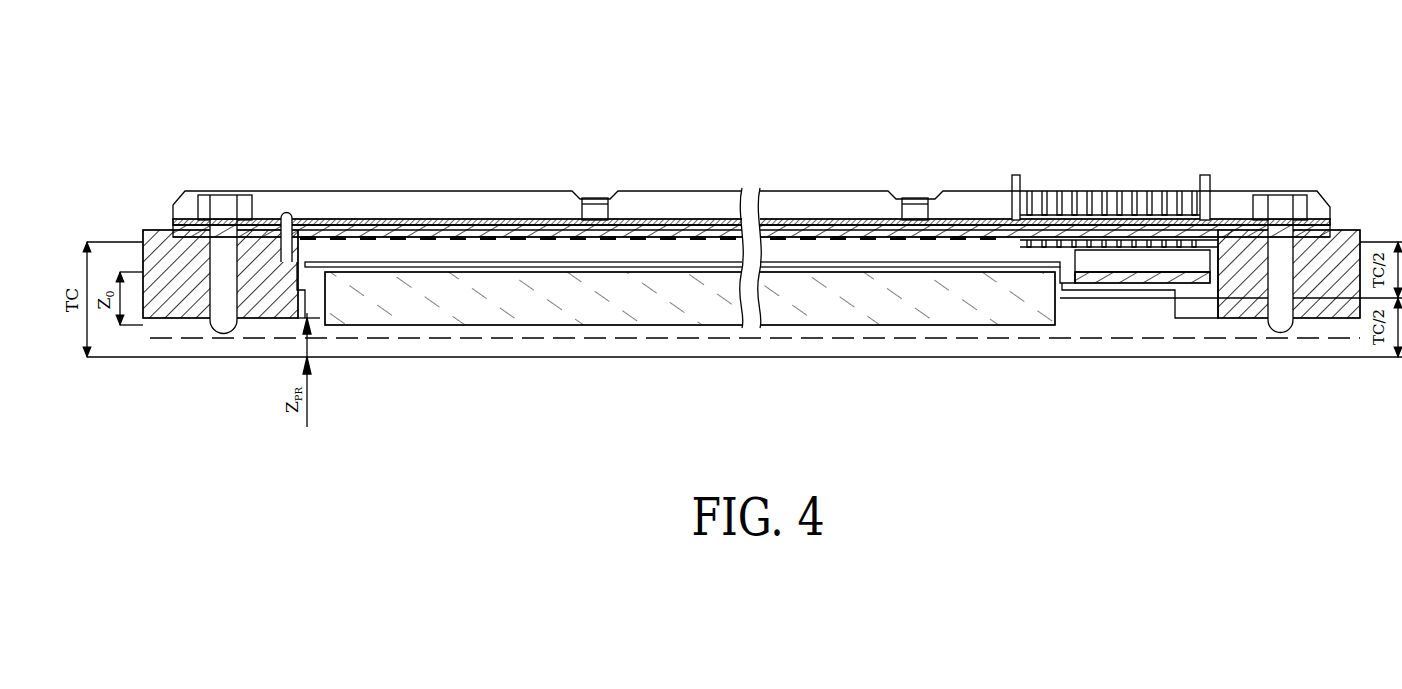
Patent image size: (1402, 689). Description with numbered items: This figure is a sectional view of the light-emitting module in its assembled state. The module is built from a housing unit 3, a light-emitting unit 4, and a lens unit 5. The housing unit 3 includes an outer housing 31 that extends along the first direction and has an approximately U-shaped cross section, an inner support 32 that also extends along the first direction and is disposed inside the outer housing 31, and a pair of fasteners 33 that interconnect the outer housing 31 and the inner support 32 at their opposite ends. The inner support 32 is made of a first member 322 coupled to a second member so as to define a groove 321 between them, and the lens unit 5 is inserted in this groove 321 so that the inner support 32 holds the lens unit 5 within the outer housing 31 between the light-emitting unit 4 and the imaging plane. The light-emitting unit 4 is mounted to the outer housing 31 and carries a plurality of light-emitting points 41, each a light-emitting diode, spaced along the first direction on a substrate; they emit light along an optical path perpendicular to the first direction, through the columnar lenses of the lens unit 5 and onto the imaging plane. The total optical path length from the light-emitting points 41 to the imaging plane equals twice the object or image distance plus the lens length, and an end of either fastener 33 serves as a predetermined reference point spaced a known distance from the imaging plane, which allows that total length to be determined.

The housing unit 3 is at (443, 189).
The outer housing 31 is at (788, 218).
The inner support 32 is at (1343, 228).
The groove 321 is at (672, 262).
The first member 322 is at (1125, 283).
The fasteners 33 is at (224, 332).
The light-emitting unit 4 is at (835, 219).
The light-emitting points 41 is at (530, 242).
The lens unit 5 is at (557, 326).